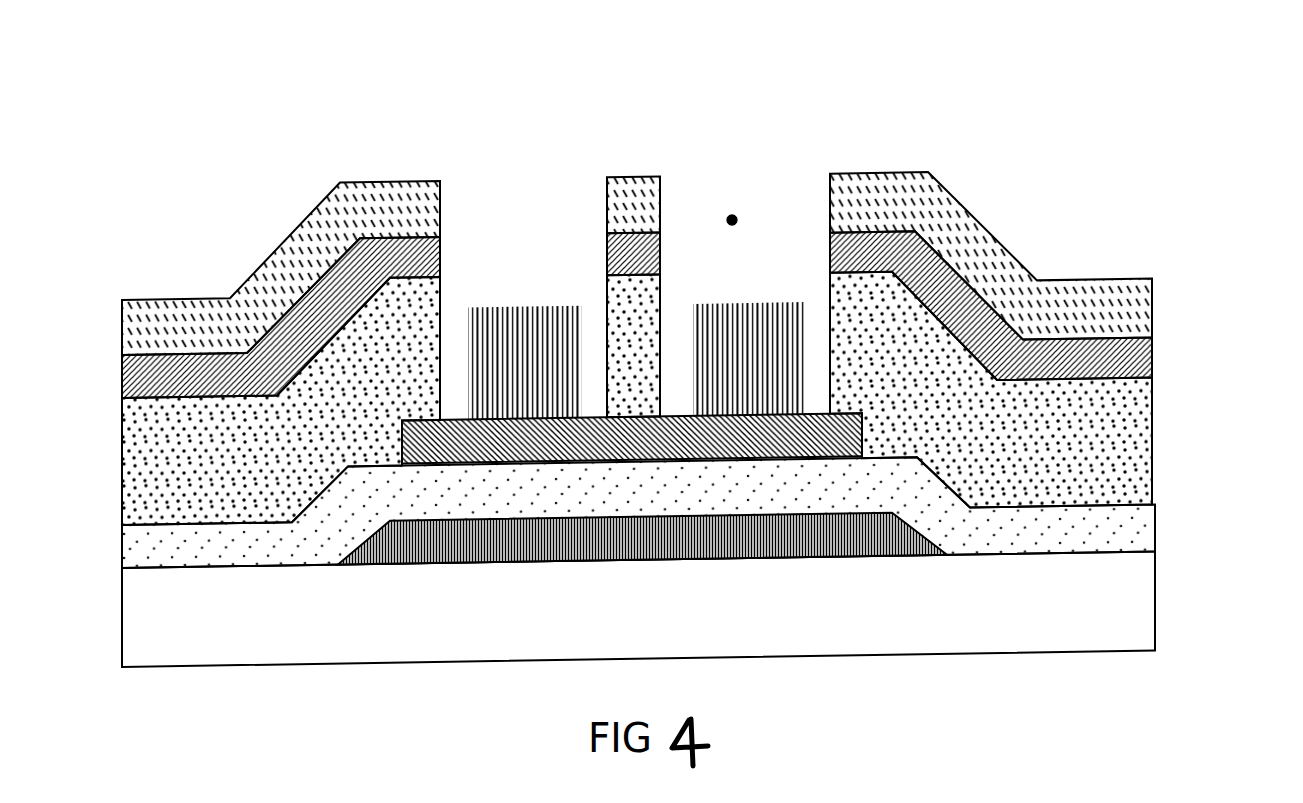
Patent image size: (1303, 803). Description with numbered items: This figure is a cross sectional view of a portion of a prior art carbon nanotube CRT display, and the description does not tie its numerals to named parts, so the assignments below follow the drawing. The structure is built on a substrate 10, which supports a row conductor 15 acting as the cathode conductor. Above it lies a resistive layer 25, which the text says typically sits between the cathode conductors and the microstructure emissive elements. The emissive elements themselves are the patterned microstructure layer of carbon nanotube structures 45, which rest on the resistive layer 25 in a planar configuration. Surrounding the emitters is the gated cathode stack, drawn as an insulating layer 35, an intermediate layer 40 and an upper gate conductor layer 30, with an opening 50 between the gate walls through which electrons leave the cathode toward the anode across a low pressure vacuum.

The substrate 10 is at (638, 609).
The gate electrode 15 is at (862, 542).
The semiconductor active layer 25 is at (818, 437).
The upper conductive layer 30 is at (927, 215).
The lower conductive layer 35 is at (292, 460).
The intermediate conductive layer 40 is at (318, 312).
The ohmic contact layer 45 is at (508, 320).
The channel opening 50 is at (732, 220).